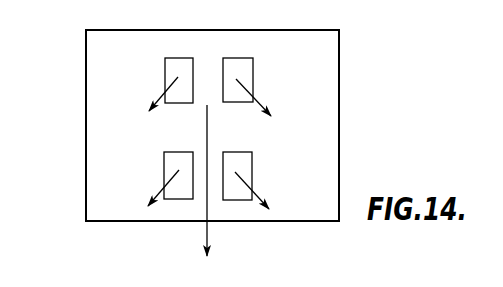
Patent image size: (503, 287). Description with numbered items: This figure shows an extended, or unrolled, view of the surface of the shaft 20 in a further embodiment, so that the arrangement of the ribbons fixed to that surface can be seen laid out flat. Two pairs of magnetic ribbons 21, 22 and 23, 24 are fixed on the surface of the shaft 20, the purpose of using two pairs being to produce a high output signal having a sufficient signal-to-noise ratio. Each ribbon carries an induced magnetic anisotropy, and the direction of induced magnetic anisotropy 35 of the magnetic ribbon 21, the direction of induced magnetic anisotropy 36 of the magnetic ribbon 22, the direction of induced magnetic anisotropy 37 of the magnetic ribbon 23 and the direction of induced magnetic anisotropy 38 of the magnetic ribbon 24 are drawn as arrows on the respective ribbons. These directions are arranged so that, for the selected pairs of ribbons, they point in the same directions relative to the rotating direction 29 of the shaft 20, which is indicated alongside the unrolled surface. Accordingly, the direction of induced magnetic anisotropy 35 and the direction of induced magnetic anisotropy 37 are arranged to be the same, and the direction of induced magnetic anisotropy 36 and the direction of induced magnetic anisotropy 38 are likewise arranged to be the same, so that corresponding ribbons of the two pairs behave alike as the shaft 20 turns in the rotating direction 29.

The shaft 20 is at (86, 129).
The magnetic ribbon 21 is at (165, 68).
The magnetic ribbon 22 is at (253, 67).
The magnetic ribbon 23 is at (164, 161).
The magnetic ribbon 24 is at (252, 162).
The rotating direction 29 is at (207, 229).
The direction of induced magnetic anisotropy 35 is at (163, 96).
The direction of induced magnetic anisotropy 36 is at (257, 97).
The direction of induced magnetic anisotropy 37 is at (163, 190).
The direction of induced magnetic anisotropy 38 is at (255, 192).